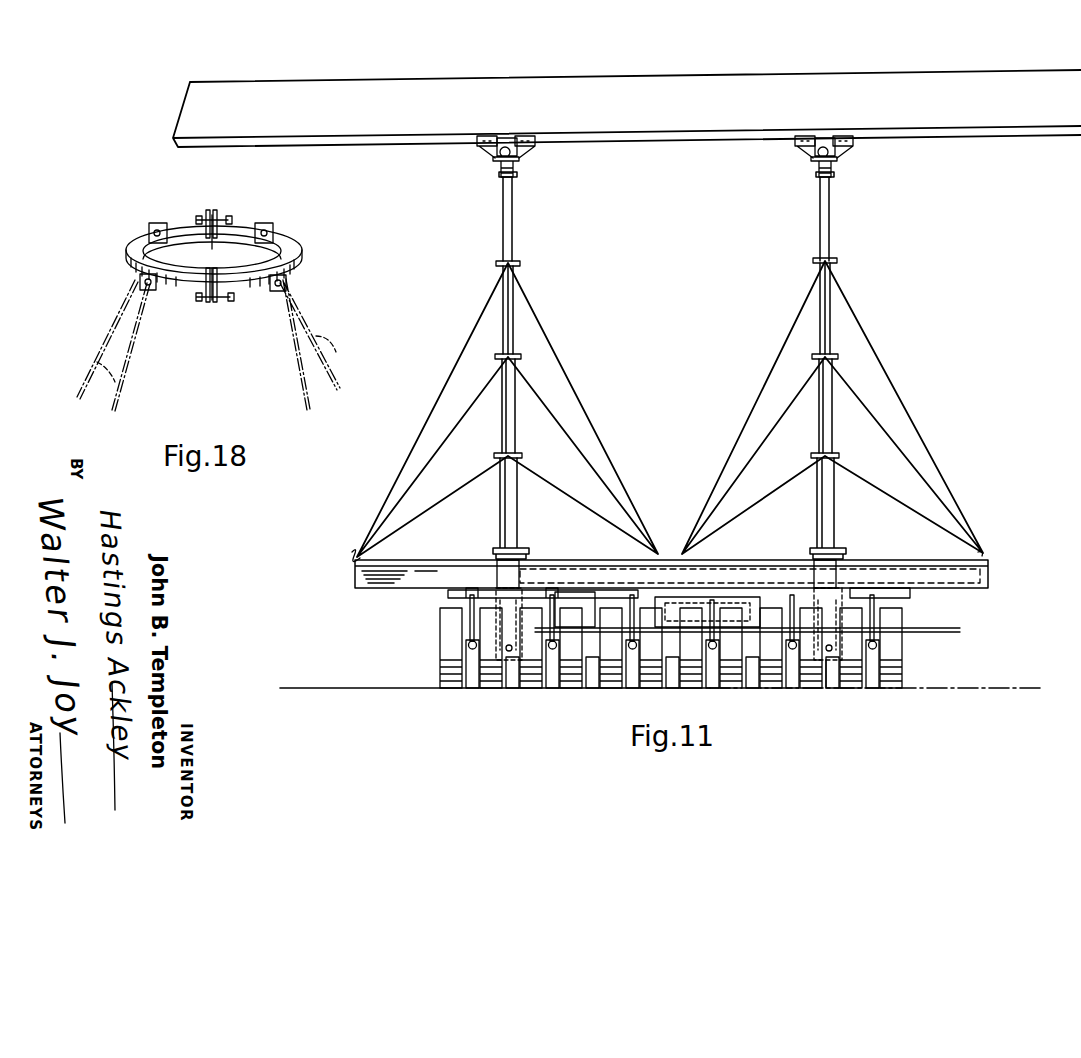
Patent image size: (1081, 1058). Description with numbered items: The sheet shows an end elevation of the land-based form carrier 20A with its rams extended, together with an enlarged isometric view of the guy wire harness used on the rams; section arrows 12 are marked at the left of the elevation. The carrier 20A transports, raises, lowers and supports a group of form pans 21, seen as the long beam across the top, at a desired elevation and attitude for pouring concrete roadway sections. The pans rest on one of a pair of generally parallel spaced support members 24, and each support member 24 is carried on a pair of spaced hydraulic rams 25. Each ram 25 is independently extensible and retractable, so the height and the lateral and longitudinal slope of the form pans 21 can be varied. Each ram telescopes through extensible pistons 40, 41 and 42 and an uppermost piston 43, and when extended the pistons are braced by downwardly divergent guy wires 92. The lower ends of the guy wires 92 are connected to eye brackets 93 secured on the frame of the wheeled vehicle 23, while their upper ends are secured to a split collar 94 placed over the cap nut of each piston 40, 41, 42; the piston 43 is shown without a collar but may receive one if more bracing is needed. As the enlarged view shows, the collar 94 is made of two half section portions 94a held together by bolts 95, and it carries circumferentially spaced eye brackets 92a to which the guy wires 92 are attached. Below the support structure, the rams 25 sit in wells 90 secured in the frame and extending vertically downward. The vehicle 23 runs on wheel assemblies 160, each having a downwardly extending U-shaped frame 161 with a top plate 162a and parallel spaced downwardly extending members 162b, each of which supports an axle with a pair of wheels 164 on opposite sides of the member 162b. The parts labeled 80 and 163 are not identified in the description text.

In FIG. 11, the section line 12- 12 is at (278, 44).
In FIG. 11, the form pans 21 is at (172, 99).
In FIG. 11, the trolley hanger bracket 80 is at (480, 147).
In FIG. 11, the support member 24 is at (520, 156).
In FIG. 11, the piston 43 is at (514, 198).
In FIG. 11, the hydraulic ram 25 is at (488, 222).
In FIG. 11, the split collar 94 is at (496, 262).
In FIG. 18, the split collar 94 is at (124, 228).
In FIG. 11, the extensible piston 42 is at (516, 300).
In FIG. 11, the extensible piston 41 is at (518, 430).
In FIG. 11, the extensible piston 40 is at (520, 522).
In FIG. 11, the guy wire 92 is at (762, 400).
In FIG. 18, the guy wire 92 is at (100, 350).
In FIG. 11, the eye bracket 93 is at (985, 535).
In FIG. 11, the form carrier 20A is at (908, 268).
In FIG. 11, the wheeled vehicle 23 is at (402, 624).
In FIG. 11, the top plate 162a is at (482, 584).
In FIG. 11, the U-shaped frame 161 is at (448, 596).
In FIG. 11, the downwardly extending member 162b is at (462, 612).
In FIG. 11, the wheel assembly 160 is at (496, 703).
In FIG. 11, the wheels 164 is at (442, 652).
In FIG. 11, the pivot link 163 is at (474, 650).
In FIG. 11, the well 90 is at (828, 686).
In FIG. 18, the eye bracket 92a is at (160, 224).
In FIG. 18, the half section portion 94a is at (229, 210).
In FIG. 18, the bolt 95 is at (214, 304).